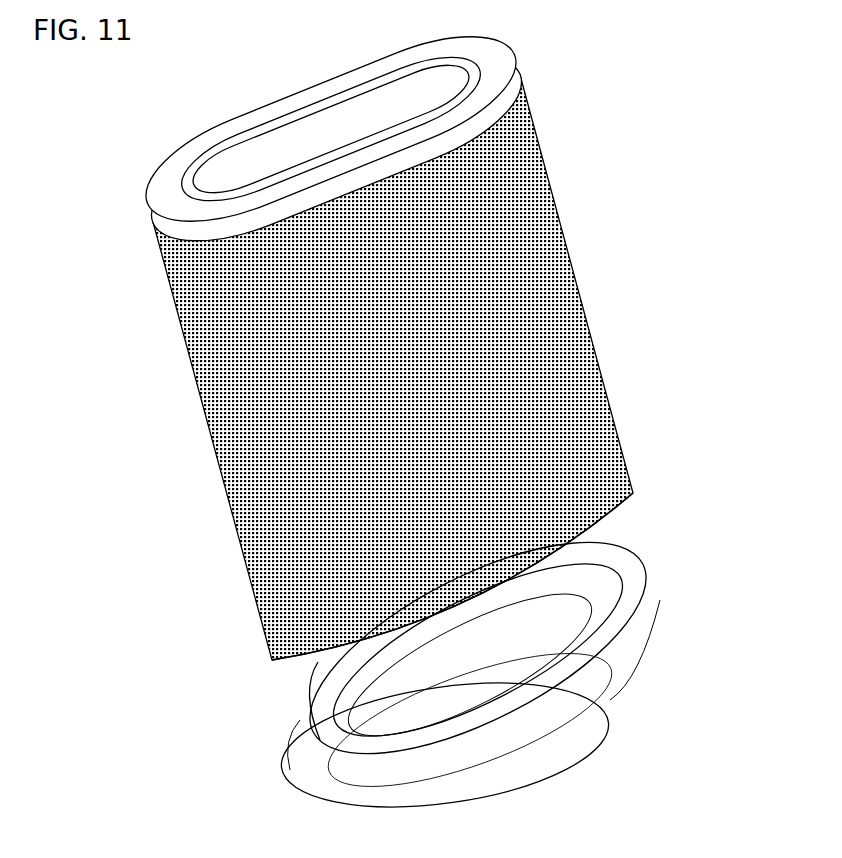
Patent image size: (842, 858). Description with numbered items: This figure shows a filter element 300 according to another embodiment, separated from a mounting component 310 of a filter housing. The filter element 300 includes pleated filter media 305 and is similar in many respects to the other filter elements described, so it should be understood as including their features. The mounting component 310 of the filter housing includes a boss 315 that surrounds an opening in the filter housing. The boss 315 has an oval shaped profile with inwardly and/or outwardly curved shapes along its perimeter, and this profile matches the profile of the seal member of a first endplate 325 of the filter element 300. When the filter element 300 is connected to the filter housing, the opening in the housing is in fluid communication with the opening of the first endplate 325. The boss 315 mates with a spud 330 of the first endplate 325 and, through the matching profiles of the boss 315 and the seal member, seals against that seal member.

The filter element 300 is at (600, 60).
The pleated filter media 305 is at (562, 231).
The mounting component 310 is at (654, 642).
The boss 315 is at (634, 565).
The first endplate 325 is at (317, 663).
The spud 330 is at (606, 528).